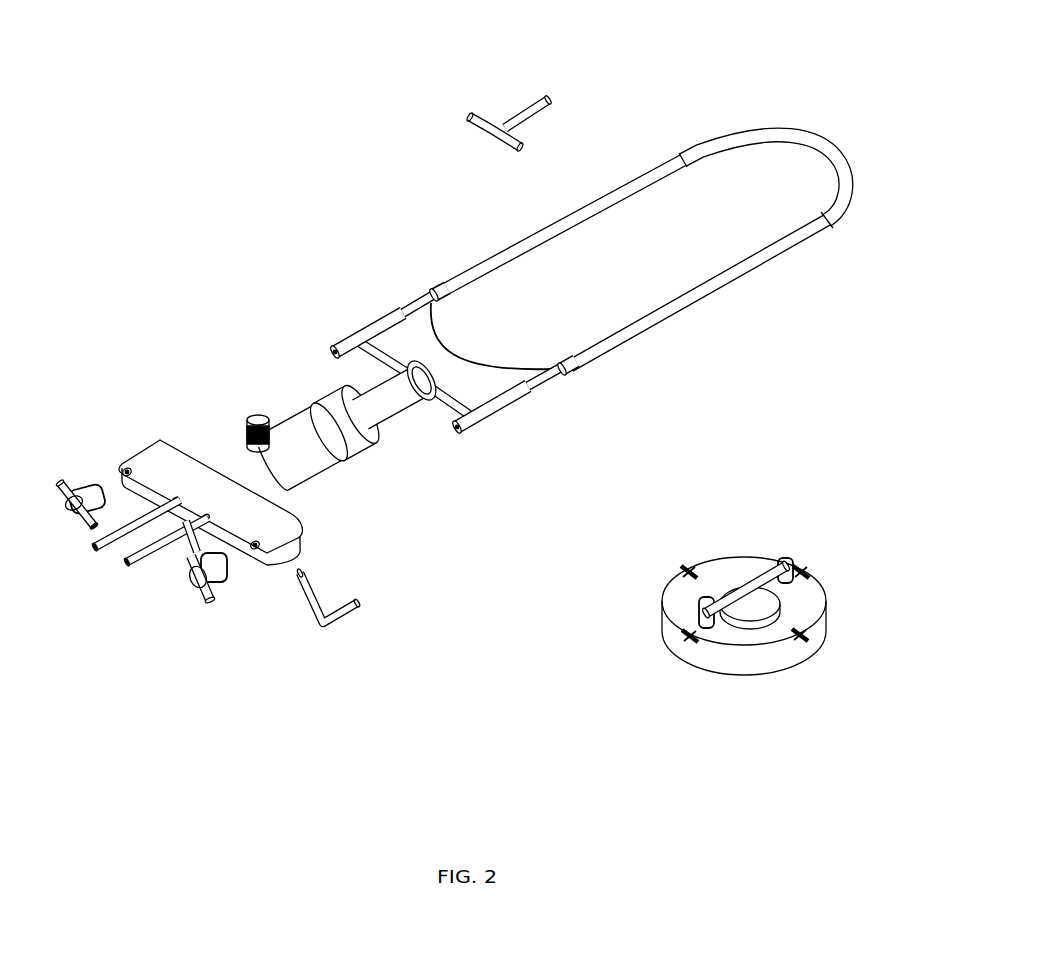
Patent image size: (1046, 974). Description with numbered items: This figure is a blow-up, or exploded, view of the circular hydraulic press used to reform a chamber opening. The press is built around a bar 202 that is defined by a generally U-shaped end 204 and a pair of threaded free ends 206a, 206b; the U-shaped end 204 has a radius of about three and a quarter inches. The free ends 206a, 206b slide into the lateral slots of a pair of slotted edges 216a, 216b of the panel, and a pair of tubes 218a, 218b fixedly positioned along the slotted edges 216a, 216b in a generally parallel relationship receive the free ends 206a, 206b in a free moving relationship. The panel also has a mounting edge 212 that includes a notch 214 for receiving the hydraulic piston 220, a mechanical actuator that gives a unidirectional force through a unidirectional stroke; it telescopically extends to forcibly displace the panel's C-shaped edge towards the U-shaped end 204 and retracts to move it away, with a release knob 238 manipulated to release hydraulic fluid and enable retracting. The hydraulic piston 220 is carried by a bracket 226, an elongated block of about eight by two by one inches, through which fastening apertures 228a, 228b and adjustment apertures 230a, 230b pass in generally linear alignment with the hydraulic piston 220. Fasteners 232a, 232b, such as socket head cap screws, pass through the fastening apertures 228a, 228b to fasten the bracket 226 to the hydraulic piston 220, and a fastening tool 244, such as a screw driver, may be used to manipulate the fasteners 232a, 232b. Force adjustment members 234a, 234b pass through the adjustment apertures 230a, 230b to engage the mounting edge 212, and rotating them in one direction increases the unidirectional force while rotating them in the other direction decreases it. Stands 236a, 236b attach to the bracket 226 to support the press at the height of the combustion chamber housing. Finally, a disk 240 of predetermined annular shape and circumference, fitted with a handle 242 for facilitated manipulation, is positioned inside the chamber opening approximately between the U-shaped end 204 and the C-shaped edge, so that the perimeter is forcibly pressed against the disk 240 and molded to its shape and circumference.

The bar 202 is at (722, 292).
The U-shaped end 204 is at (779, 131).
The free end 206a is at (440, 285).
The free end 206b is at (566, 372).
The mounting edge 212 is at (368, 362).
The notch 214 is at (435, 400).
The slotted edge 216a is at (424, 301).
The slotted edge 216b is at (515, 384).
The tube 218a is at (342, 351).
The tube 218b is at (537, 408).
The hydraulic piston 220 is at (350, 450).
The bracket 226 is at (205, 487).
The fastening aperture 228a is at (177, 497).
The fastening aperture 228b is at (212, 518).
The adjustment aperture 230a is at (128, 468).
The adjustment aperture 230b is at (260, 547).
The fastener 232a is at (97, 550).
The fastener 232b is at (129, 566).
The force adjustment member 234a is at (85, 478).
The force adjustment member 234b is at (222, 565).
The stand 236a is at (228, 558).
The stand 236b is at (360, 604).
The release knob 238 is at (257, 416).
The disk 240 is at (723, 660).
The handle 242 is at (783, 560).
The fastening tool 244 is at (521, 116).